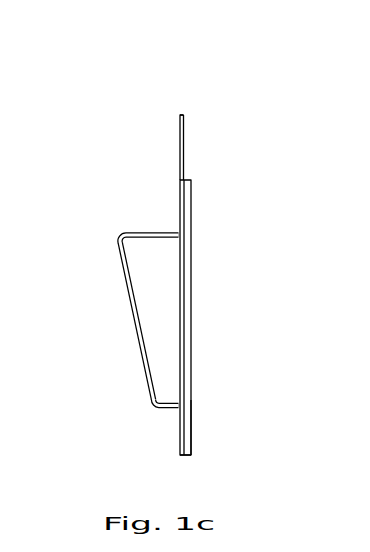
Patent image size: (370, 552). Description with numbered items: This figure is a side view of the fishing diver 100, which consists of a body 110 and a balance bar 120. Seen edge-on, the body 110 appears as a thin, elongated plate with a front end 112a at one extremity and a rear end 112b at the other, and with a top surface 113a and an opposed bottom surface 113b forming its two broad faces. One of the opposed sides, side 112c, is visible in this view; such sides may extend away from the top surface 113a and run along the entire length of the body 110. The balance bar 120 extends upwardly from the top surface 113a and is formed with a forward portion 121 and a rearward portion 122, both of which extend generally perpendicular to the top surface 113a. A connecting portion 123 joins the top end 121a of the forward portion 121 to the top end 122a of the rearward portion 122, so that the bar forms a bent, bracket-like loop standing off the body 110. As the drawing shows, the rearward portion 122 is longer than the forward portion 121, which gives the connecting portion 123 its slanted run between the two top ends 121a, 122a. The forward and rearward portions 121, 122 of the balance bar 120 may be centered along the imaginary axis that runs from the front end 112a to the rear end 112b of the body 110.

The fishing diver 100 is at (159, 254).
The body 110 is at (200, 200).
The front end 112a is at (190, 455).
The rear end 112b is at (180, 115).
The side 112c is at (192, 440).
The top surface 113a is at (180, 135).
The bottom surface 113b is at (184, 125).
The balance bar 120 is at (151, 313).
The forward portion 121 is at (139, 427).
The top end of forward portion 121a is at (160, 403).
The rearward portion 122 is at (150, 230).
The top end of rearward portion 122a is at (133, 237).
The connecting portion 123 is at (133, 322).